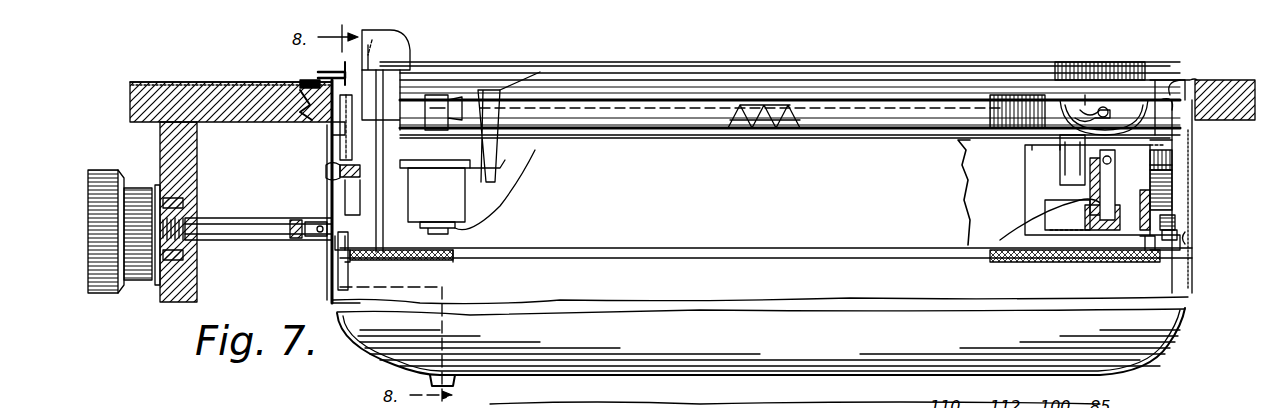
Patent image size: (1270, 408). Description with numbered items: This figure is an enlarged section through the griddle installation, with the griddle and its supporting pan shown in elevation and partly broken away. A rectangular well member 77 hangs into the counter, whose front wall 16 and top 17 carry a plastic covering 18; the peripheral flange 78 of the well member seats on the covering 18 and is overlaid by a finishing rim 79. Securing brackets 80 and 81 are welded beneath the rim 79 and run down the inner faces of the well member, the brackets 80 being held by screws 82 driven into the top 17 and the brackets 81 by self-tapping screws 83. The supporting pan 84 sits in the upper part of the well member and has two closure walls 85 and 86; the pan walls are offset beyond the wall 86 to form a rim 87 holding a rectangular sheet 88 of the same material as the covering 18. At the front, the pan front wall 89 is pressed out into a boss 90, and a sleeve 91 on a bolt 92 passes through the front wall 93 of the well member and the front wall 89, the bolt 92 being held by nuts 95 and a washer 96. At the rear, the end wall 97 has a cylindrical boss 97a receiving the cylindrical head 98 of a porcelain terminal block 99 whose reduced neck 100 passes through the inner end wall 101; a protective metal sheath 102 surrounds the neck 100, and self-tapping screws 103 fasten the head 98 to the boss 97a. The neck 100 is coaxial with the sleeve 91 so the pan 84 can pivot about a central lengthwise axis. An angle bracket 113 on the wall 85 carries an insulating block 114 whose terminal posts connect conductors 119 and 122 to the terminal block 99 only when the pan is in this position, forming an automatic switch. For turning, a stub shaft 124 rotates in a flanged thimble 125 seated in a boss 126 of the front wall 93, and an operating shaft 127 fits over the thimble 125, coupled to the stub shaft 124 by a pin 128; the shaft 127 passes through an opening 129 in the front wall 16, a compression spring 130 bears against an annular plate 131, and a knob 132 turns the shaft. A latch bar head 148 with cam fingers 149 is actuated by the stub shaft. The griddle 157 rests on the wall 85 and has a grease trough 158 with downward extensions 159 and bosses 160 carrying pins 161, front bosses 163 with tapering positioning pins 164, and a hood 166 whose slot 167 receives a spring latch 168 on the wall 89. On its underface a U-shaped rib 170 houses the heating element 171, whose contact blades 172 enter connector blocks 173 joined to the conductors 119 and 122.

The front wall 16 is at (197, 146).
The top 17 is at (145, 80).
The covering 18 is at (214, 84).
The well member 77 is at (348, 330).
The peripheral flange 78 is at (318, 80).
The finishing rim 79 is at (300, 82).
The securing bracket 80 is at (335, 80).
The securing bracket 81 is at (880, 110).
The screw 82 is at (285, 116).
The self-tapping screw 83 is at (553, 138).
The supporting pan 84 is at (735, 235).
The closure wall 85 is at (955, 150).
The closure wall 86 is at (1085, 262).
The rim 87 is at (1180, 265).
The rectangular sheet 88 is at (1035, 262).
The front wall 89 is at (404, 260).
The boss 90 is at (358, 262).
The sleeve 91 is at (338, 180).
The bolt 92 is at (325, 170).
The front wall 93 is at (330, 292).
The nut 95 is at (435, 191).
The washer 96 is at (437, 209).
The end wall 97 is at (1192, 242).
The cylindrical boss 97a is at (1180, 238).
The cylindrical head 98 is at (1183, 160).
The terminal block 99 is at (1170, 178).
The neck 100 is at (1160, 160).
The inner end wall 101 is at (1152, 262).
The protective metal sheath 102 is at (1178, 195).
The self-tapping screw 103 is at (1170, 80).
The angle bracket 113 is at (1025, 168).
The block 114 is at (1050, 222).
The conductor 119 is at (1010, 235).
The conductor 122 is at (455, 232).
The stub shaft 124 is at (330, 248).
The flanged thimble 125 is at (310, 222).
The boss 126 is at (330, 258).
The operating shaft 127 is at (216, 218).
The pin 128 is at (290, 222).
The opening 129 is at (210, 240).
The compression spring 130 is at (195, 212).
The annular plate 131 is at (158, 283).
The knob 132 is at (103, 170).
The head 148 is at (360, 135).
The cam finger 149 is at (332, 135).
The griddle 157 is at (708, 53).
The grease receiving trough 158 is at (1070, 105).
The downward extension 159 is at (1125, 65).
The boss 160 is at (1105, 95).
The pin 161 is at (1076, 160).
The boss 163 is at (490, 88).
The positioning pin 164 is at (495, 160).
The hood 166 is at (398, 33).
The slot 167 is at (396, 161).
The spring latch 168 is at (378, 125).
The rib 170 is at (700, 128).
The heating element 171 is at (795, 128).
The contact blade 172 is at (445, 90).
The connector block 173 is at (470, 210).